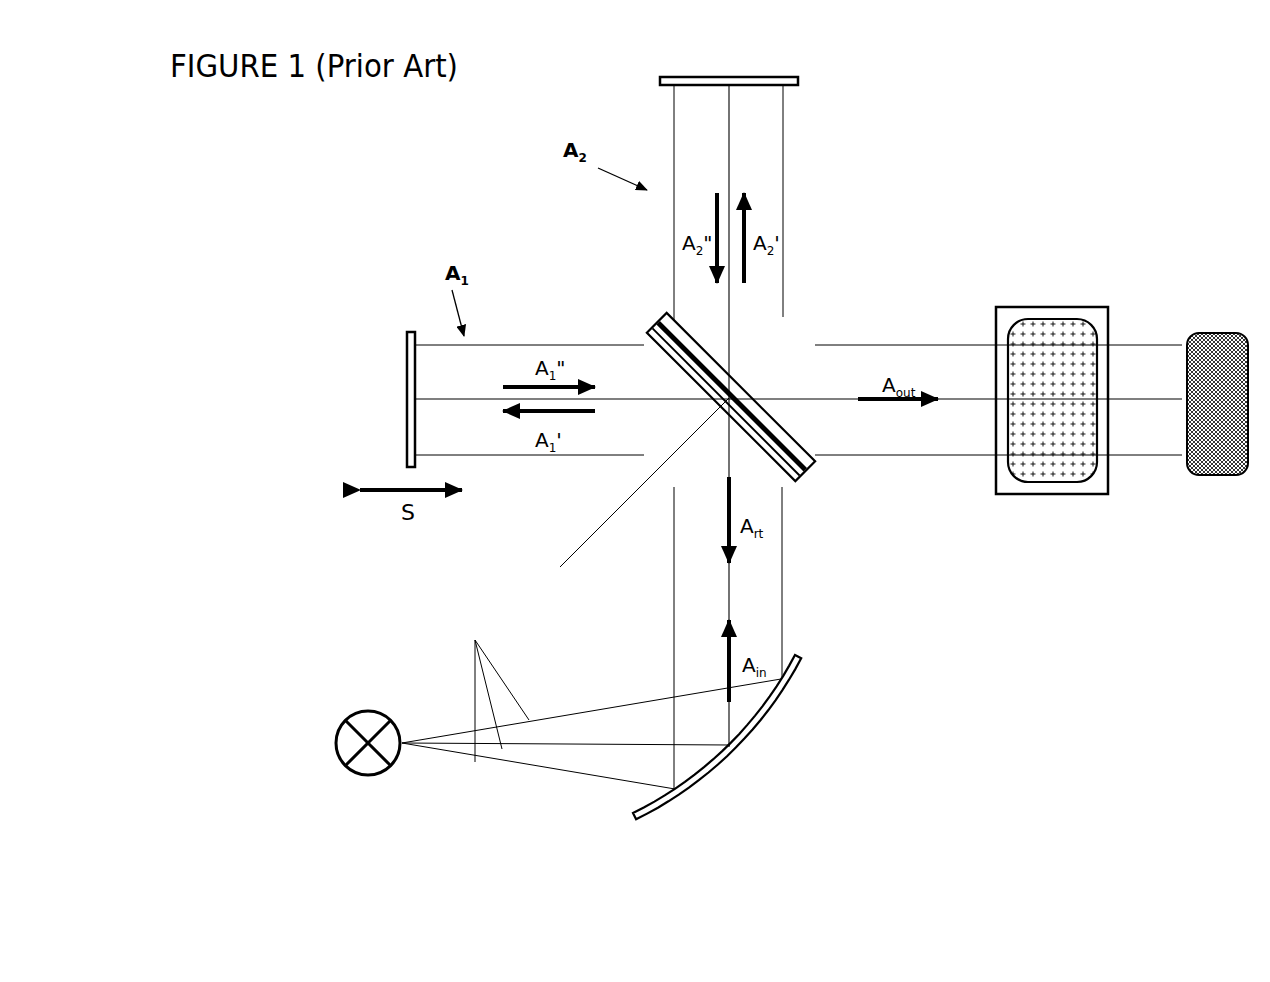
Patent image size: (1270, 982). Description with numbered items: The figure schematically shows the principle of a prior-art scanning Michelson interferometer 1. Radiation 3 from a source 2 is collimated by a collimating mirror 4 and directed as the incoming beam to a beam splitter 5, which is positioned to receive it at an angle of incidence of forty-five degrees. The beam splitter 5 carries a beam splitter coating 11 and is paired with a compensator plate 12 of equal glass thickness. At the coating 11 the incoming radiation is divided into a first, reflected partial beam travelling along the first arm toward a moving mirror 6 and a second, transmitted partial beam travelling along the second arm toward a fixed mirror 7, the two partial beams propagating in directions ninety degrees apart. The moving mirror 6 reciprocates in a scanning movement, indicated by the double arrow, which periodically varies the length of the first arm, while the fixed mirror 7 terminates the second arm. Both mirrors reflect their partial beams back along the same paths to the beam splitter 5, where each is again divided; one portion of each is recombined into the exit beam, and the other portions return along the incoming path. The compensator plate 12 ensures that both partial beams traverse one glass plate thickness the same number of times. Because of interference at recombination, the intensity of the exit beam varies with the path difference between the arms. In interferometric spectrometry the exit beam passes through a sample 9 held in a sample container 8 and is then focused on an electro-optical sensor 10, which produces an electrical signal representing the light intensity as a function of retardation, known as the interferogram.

The scanning Michelson interferometer 1 is at (868, 255).
The source 2 is at (365, 733).
The radiation 3 is at (490, 687).
The collimating mirror 4 is at (768, 718).
The beam splitter 5 is at (653, 322).
The moving mirror 6 is at (407, 375).
The fixed mirror 7 is at (800, 80).
The sample container 8 is at (1052, 495).
The sample 9 is at (1053, 437).
The electro-optical sensor 10 is at (1220, 333).
The beam splitter coating 11 is at (797, 482).
The compensator plate 12 is at (815, 465).